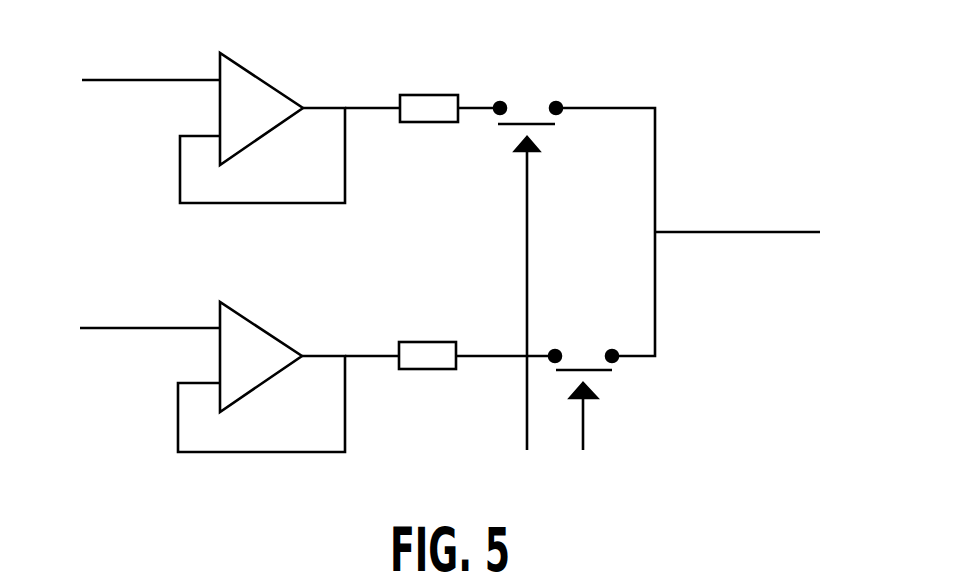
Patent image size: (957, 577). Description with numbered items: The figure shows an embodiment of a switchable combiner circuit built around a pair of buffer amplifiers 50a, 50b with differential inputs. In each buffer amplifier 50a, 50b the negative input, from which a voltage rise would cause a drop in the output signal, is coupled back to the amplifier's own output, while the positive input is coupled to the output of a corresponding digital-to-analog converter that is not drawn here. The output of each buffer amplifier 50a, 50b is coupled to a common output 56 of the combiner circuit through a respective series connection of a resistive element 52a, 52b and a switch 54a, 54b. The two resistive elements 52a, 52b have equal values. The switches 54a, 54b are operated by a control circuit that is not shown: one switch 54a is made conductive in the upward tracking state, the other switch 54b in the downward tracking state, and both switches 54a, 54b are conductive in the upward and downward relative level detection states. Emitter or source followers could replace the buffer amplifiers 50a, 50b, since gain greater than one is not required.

The buffer amplifier 50a is at (270, 82).
The buffer amplifier 50b is at (270, 328).
The resistive element 52a is at (430, 95).
The resistive element 52b is at (427, 342).
The switch 54a is at (527, 120).
The switch 54b is at (586, 368).
The output 56 is at (780, 232).